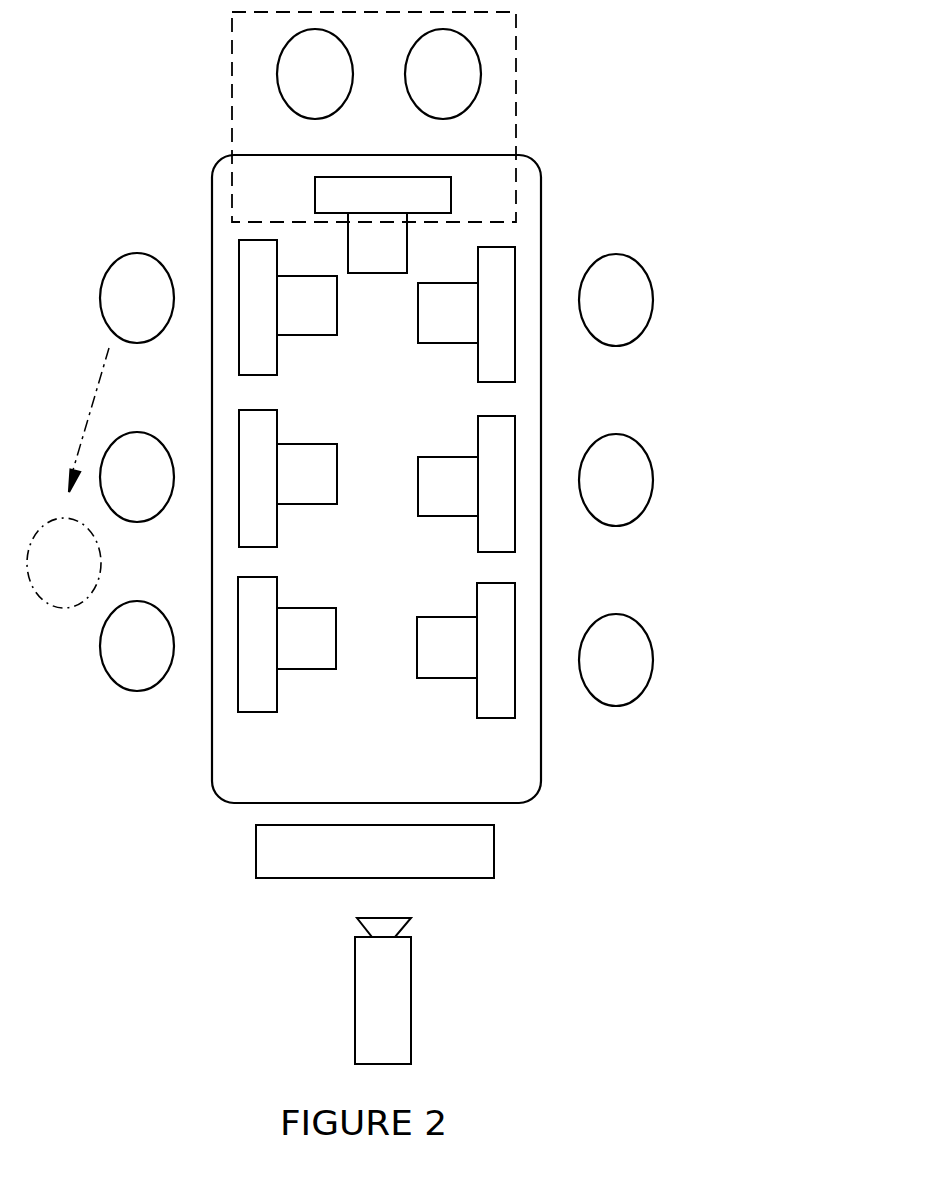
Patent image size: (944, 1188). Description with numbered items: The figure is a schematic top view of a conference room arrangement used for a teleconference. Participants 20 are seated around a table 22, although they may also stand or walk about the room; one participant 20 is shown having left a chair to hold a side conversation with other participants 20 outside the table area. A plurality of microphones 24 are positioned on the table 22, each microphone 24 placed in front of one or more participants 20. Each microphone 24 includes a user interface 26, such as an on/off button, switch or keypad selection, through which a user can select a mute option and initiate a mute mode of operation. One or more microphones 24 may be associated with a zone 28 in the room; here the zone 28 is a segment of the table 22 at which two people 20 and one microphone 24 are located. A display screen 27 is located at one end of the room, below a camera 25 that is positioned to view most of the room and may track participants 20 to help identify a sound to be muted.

The participant 20 is at (340, 367).
The table 22 is at (540, 160).
The microphone 24 is at (451, 191).
The user interface 26 is at (337, 278).
The zone 28 is at (232, 77).
The display screen 27 is at (309, 878).
The camera 25 is at (355, 998).